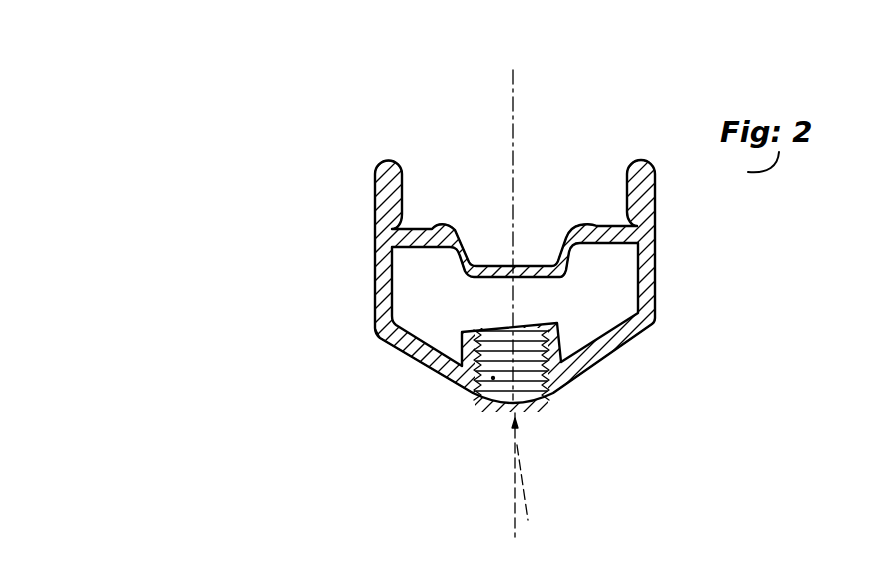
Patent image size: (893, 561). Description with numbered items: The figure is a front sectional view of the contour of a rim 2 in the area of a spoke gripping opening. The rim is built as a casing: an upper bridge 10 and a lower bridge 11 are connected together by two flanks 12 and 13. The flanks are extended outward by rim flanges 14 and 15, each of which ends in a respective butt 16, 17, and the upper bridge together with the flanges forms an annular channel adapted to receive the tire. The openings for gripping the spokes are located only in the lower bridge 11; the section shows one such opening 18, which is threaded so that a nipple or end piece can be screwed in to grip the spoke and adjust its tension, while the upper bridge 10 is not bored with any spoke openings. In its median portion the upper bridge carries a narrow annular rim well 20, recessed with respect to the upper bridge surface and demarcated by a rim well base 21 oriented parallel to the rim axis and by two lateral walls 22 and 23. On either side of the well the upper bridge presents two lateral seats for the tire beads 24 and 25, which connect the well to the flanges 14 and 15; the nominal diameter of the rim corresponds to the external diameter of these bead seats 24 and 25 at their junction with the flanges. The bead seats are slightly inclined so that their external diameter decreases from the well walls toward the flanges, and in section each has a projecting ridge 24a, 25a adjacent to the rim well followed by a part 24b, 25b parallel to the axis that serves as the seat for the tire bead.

The rim 2 is at (340, 223).
The upper bridge 10 is at (468, 260).
The lower bridge 11 is at (588, 358).
The flank 12 is at (375, 302).
The flank 13 is at (538, 278).
The rim flange 14 is at (375, 200).
The rim flange 15 is at (655, 205).
The butt 16 is at (384, 164).
The butt 17 is at (651, 165).
The opening 18 is at (480, 393).
The rim well 20 is at (523, 244).
The rim well base 21 is at (656, 322).
The lateral wall 22 is at (473, 266).
The lateral wall 23 is at (560, 244).
The bead seat 24 is at (413, 228).
The projecting ridge 24a is at (445, 222).
The part parallel to the axis 24b is at (395, 160).
The bead seat 25 is at (612, 226).
The projecting ridge 25a is at (565, 232).
The part parallel to the axis 25b is at (617, 224).